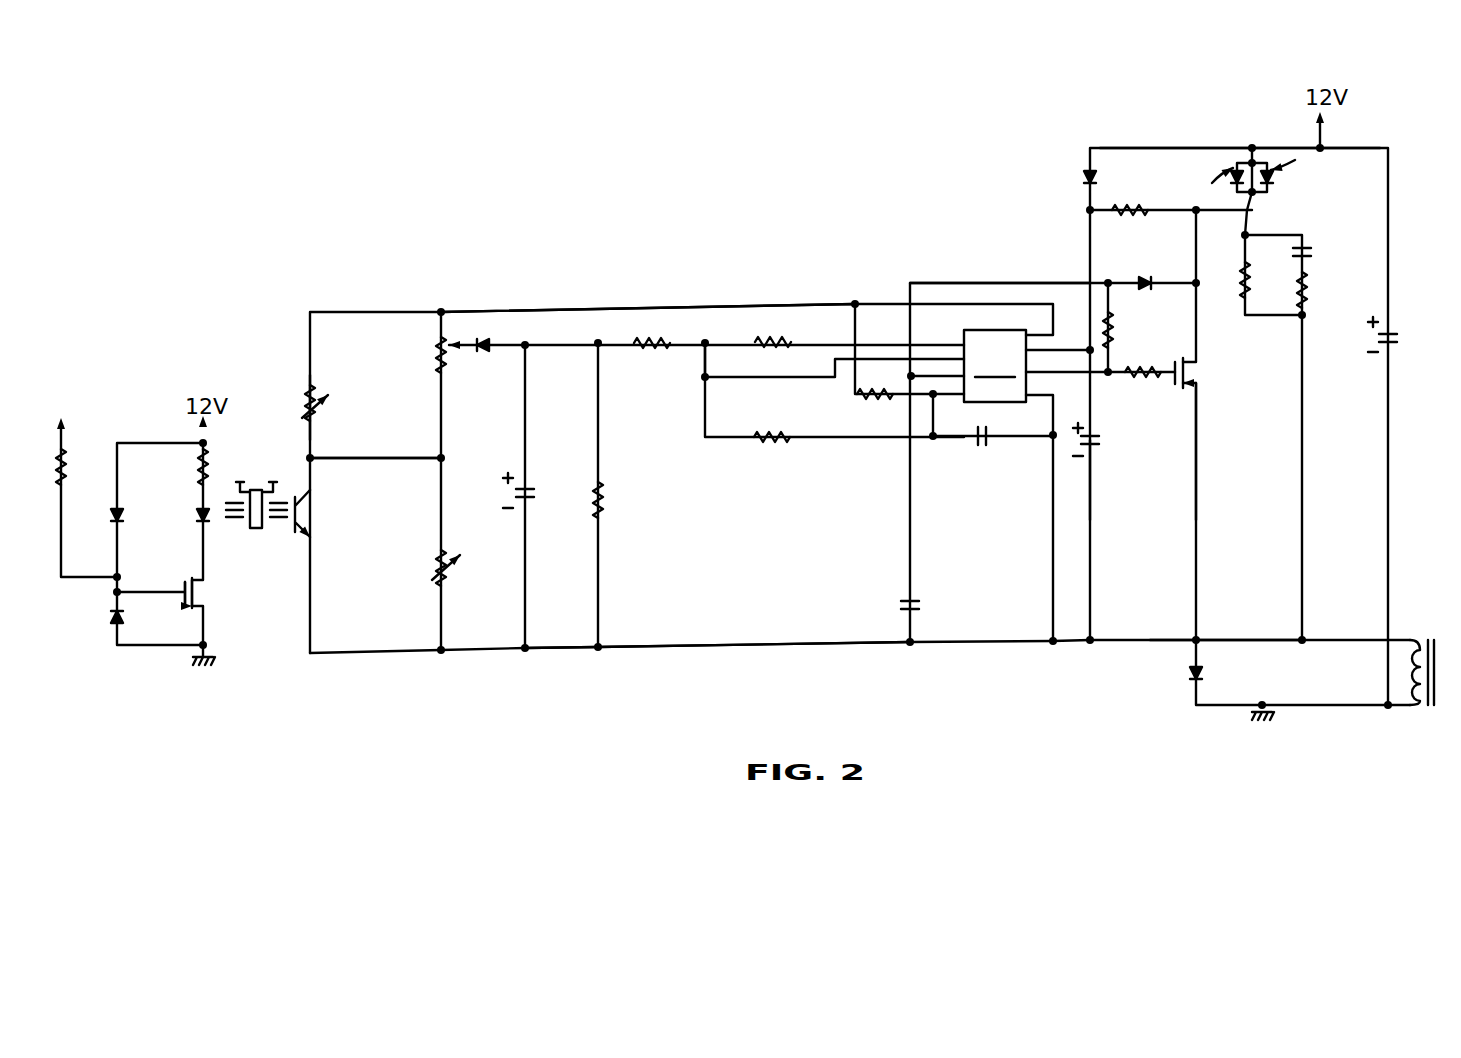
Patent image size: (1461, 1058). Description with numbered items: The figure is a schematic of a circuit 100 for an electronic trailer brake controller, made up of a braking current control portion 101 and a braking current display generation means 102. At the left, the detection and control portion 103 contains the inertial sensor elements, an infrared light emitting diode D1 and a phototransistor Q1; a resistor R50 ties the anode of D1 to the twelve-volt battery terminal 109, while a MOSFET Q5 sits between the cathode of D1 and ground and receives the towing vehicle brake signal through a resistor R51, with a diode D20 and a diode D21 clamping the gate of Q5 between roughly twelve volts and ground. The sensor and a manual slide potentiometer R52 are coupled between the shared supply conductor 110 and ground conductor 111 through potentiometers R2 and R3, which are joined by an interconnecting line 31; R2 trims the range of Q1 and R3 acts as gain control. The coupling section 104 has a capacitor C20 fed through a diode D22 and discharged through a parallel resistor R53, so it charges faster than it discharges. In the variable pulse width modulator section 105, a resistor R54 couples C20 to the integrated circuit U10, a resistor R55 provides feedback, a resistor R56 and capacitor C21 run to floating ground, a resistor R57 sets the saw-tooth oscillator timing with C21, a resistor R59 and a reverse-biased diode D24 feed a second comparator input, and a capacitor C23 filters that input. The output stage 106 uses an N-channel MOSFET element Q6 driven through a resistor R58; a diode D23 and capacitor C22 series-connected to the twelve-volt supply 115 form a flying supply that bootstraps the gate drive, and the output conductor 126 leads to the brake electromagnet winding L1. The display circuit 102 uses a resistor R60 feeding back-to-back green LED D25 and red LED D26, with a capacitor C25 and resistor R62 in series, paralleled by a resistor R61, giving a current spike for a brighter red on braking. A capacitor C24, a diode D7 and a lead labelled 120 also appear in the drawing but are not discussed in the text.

The circuit 100 is at (797, 194).
The braking current control portion 101 is at (735, 270).
The braking current display generation means 102 is at (1262, 383).
The detection and control portion 103 is at (263, 393).
The coupling section 104 is at (562, 630).
The variable pulse width modulator section 105 is at (967, 458).
The output stage 106 is at (1156, 465).
The 12-volt battery terminal 109 is at (208, 445).
The supply conductor 110 is at (514, 310).
The ground conductor 111 is at (757, 650).
The 12-volt supply 115 is at (1208, 148).
The feedback line 120 is at (996, 283).
The output conductor 126 is at (1250, 628).
The interconnecting line 31 is at (365, 458).
The resistor R51 is at (72, 468).
The diode D20 is at (120, 512).
The diode D21 is at (114, 620).
The MOSFET Q5 is at (192, 608).
The resistor R50 is at (208, 470).
The infrared light emitting diode D1 is at (208, 520).
The phototransistor Q1 is at (295, 528).
The potentiometer R2 is at (316, 412).
The potentiometer R3 is at (436, 360).
The diode D22 is at (492, 355).
The capacitor C20 is at (530, 493).
The resistor R53 is at (603, 496).
The slide potentiometer R52 is at (448, 575).
The resistor R54 is at (650, 341).
The resistor R55 is at (770, 341).
The resistor R56 is at (775, 442).
The resistor R57 is at (888, 400).
The capacitor C21 is at (987, 438).
The capacitor C23 is at (915, 603).
The integrated circuit U10 is at (991, 355).
The diode D23 is at (1086, 178).
The resistor R60 is at (1122, 208).
The diode D24 is at (1148, 283).
The resistor R59 is at (1110, 330).
The resistor R58 is at (1140, 376).
The MOSFET element Q6 is at (1185, 358).
The capacitor C22 is at (1095, 442).
The green LED D25 is at (1291, 186).
The red LED D26 is at (1235, 188).
The resistor R61 is at (1250, 295).
The resistor R62 is at (1306, 300).
The capacitor C25 is at (1306, 250).
The capacitor C24 is at (1393, 337).
The diode D7 is at (1188, 675).
The inductive winding L1 is at (1432, 610).